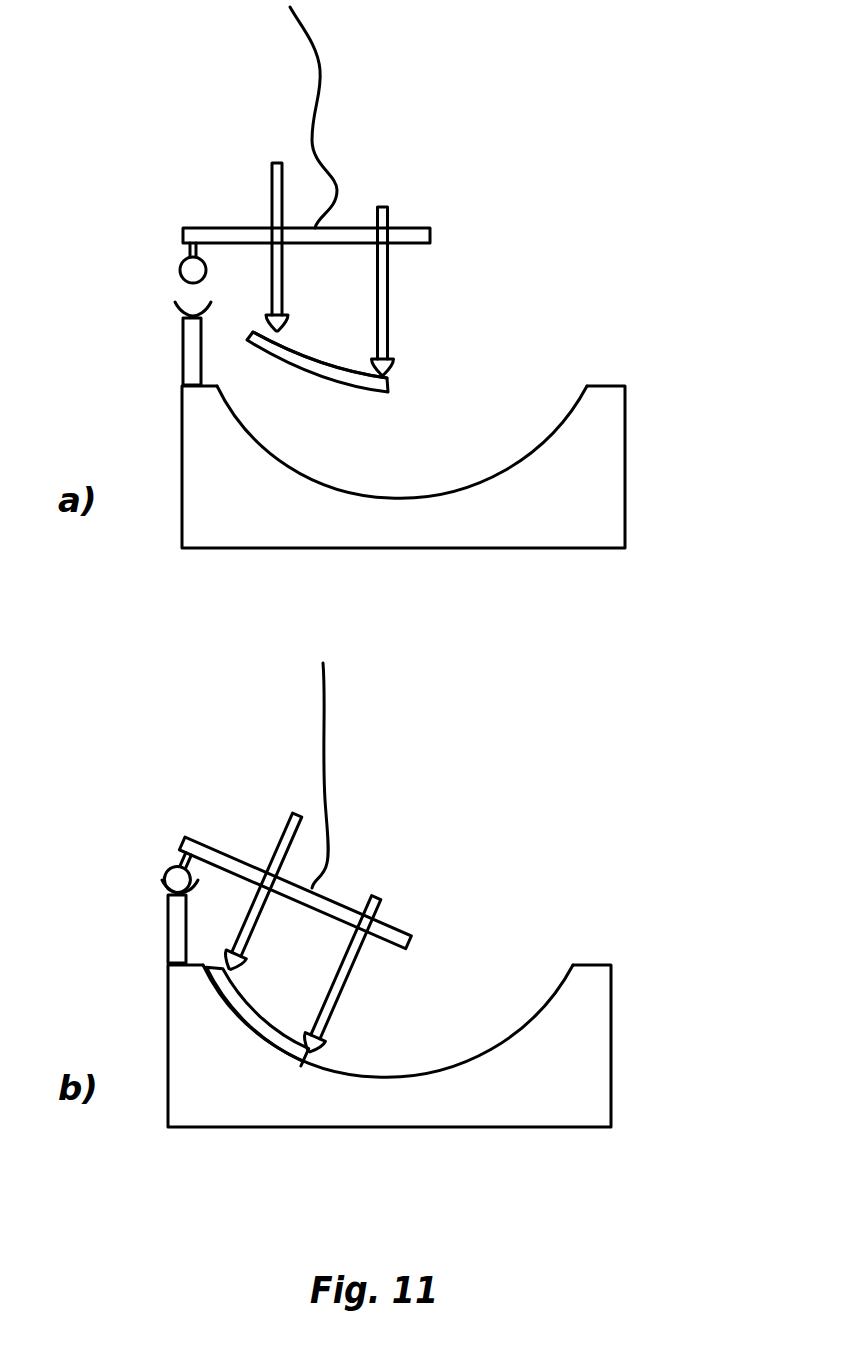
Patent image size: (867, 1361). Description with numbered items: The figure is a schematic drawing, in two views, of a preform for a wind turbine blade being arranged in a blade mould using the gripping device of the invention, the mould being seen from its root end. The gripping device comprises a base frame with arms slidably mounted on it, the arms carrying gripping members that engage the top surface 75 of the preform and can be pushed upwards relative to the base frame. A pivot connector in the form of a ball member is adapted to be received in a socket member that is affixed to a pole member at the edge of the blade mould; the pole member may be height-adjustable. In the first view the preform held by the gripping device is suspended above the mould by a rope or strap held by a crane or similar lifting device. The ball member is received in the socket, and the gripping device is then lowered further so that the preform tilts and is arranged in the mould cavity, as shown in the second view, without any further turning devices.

The top surface 75 is at (323, 360).